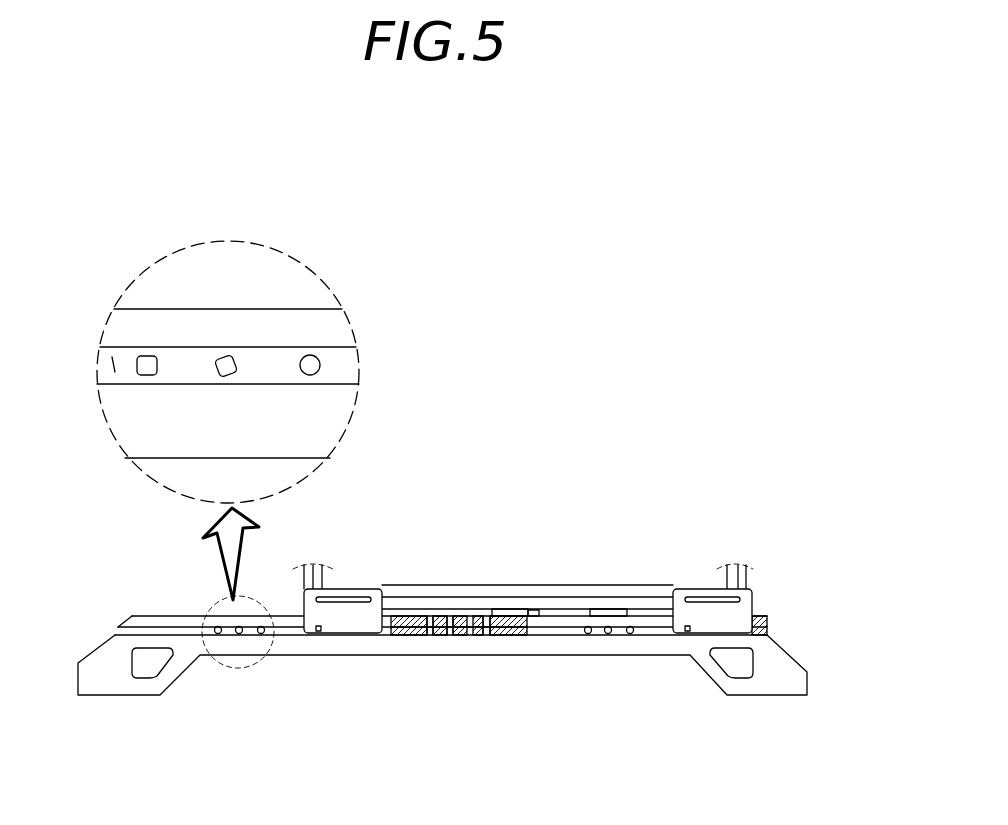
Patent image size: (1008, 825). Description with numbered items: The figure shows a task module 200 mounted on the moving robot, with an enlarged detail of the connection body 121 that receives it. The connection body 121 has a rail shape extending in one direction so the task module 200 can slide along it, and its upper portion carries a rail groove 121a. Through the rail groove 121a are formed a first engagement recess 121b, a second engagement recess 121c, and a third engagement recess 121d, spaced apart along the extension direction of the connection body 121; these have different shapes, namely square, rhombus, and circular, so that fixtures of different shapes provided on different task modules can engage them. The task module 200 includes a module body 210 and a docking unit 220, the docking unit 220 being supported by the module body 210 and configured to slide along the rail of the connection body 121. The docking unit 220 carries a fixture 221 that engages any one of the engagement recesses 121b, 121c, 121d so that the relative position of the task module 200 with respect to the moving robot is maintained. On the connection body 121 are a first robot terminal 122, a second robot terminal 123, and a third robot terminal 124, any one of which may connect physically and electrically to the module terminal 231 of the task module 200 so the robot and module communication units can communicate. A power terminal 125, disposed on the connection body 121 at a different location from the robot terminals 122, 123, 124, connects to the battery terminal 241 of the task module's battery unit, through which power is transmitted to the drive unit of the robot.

The connection body 121 is at (110, 429).
The rail groove 121a is at (112, 358).
The first engagement recess 121b is at (147, 356).
The second engagement recess 121c is at (226, 357).
The third engagement recess 121d is at (310, 355).
The first robot terminal 122 is at (425, 637).
The second robot terminal 123 is at (455, 637).
The third robot terminal 124 is at (493, 637).
The power terminal 125 is at (368, 636).
The task module 200 is at (542, 639).
The module body 210 is at (748, 574).
The docking unit 220 is at (342, 625).
The fixture 221 is at (317, 632).
The module terminal 231 is at (537, 611).
The battery terminal 241 is at (502, 610).